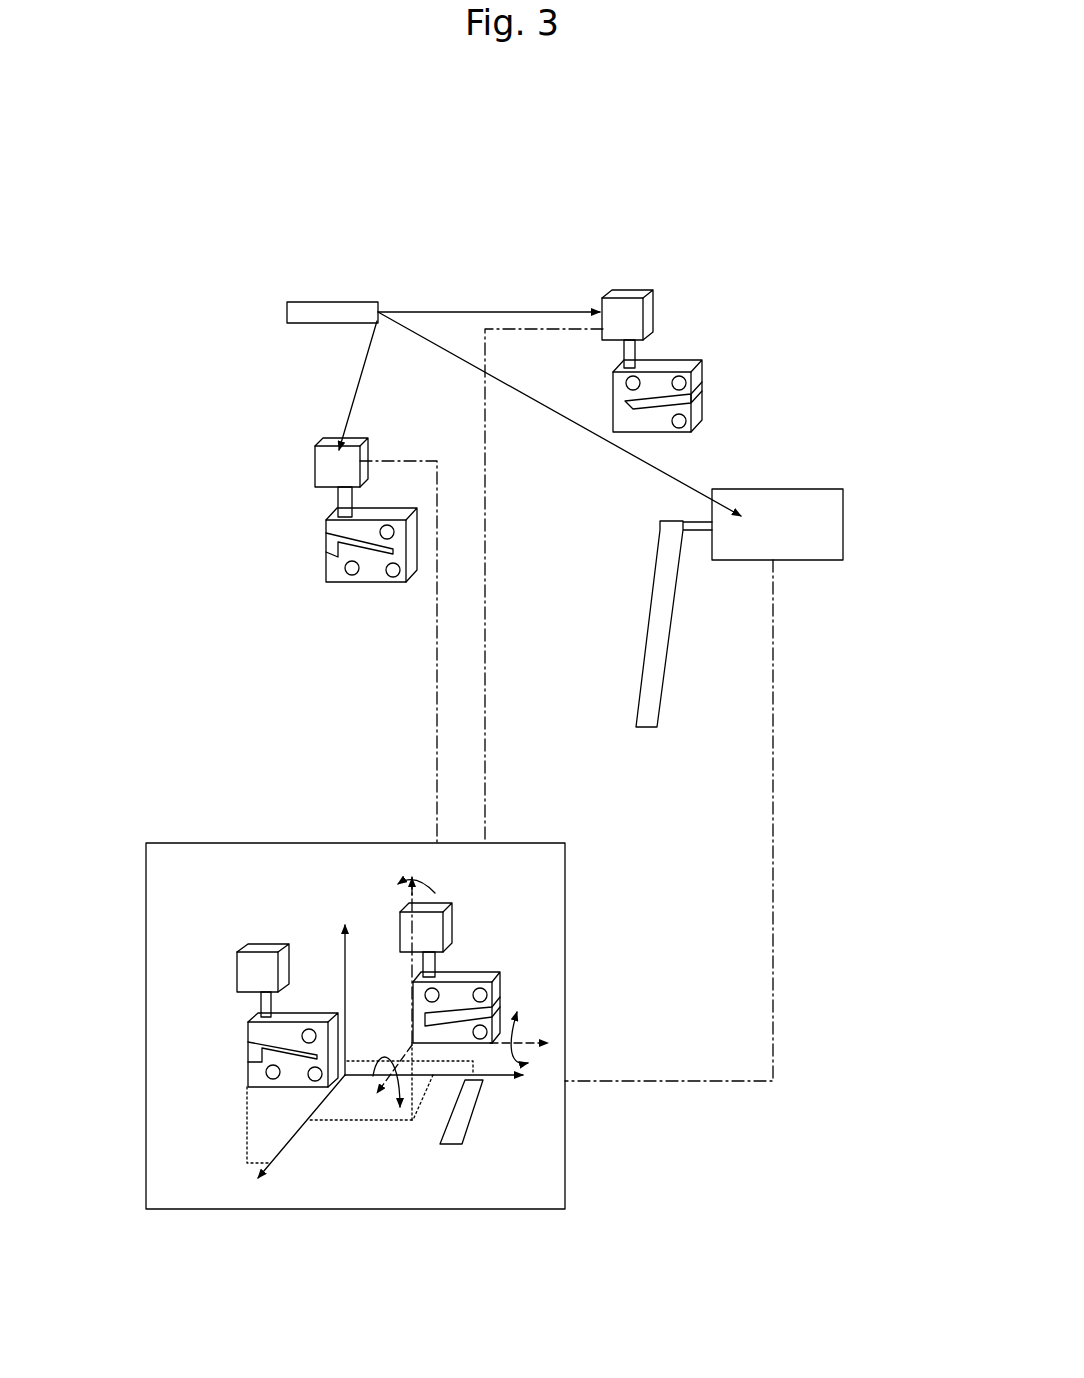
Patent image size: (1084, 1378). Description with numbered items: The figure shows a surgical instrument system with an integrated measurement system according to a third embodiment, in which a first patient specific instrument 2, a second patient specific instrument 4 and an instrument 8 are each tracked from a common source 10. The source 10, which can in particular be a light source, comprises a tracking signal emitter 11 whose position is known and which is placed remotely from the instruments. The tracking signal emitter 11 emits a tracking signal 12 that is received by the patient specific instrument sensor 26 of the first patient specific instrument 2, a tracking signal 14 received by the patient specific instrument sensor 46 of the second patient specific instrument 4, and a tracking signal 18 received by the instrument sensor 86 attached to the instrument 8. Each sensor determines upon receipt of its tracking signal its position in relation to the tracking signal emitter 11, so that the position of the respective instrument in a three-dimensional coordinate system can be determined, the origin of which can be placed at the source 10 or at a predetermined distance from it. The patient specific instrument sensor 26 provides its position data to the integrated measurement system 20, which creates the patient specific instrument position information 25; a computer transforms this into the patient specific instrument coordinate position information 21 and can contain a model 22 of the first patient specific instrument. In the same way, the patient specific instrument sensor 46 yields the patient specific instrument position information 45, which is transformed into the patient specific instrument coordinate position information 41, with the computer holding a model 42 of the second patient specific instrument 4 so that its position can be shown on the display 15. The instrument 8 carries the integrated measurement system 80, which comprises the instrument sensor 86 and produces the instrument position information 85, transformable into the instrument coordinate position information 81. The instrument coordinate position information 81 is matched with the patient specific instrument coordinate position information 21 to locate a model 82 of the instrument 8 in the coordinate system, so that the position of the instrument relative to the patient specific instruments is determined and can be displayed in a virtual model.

The source 10 is at (286, 292).
The tracking signal emitter 11 is at (332, 309).
The tracking signal 12 is at (498, 310).
The tracking signal 14 is at (352, 400).
The tracking signal 18 is at (573, 422).
The integrated measurement system 20 is at (718, 265).
The patient specific instrument position information 25 is at (517, 327).
The patient specific instrument sensor 26 is at (627, 308).
The patient specific instrument 2 is at (705, 372).
The patient specific instrument sensor 46 is at (333, 468).
The patient specific instrument 4 is at (337, 572).
The patient specific instrument position information 45 is at (437, 665).
The integrated measurement system 80 is at (816, 534).
The instrument sensor 86 is at (818, 503).
The instrument 8 is at (656, 705).
The instrument position information 85 is at (773, 768).
The display 15 is at (146, 906).
The patient specific instrument coordinate position information 21 is at (492, 1037).
The model 22 is at (458, 993).
The model 42 is at (287, 1033).
The patient specific instrument coordinate position information 41 is at (247, 1087).
The instrument coordinate position information 81 is at (483, 1082).
The model 82 is at (457, 1132).